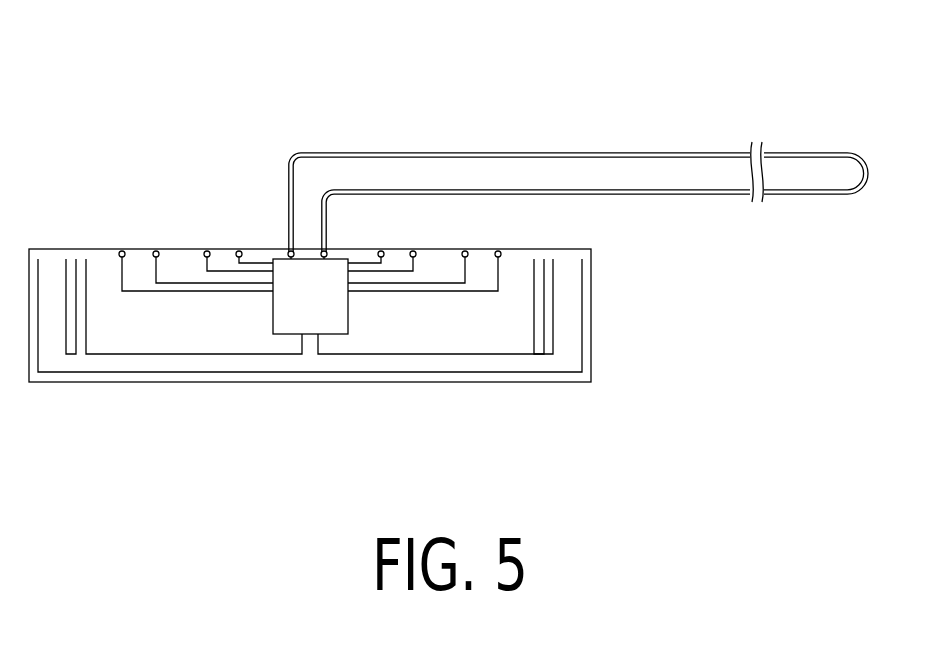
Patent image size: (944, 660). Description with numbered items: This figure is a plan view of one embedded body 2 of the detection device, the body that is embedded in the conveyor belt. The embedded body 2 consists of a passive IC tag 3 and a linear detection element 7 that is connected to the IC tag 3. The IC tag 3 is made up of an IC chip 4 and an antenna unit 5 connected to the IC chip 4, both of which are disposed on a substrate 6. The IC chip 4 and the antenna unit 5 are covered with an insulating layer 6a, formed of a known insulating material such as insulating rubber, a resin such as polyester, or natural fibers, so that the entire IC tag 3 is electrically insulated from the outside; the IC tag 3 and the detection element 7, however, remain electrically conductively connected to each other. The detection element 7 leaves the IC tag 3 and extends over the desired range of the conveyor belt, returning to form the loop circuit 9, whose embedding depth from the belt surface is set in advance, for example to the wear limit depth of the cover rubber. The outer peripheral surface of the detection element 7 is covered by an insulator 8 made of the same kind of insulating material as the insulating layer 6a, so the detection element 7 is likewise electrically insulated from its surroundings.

The embedded body 2 is at (255, 141).
The IC tag 3 is at (181, 237).
The IC chip 4 is at (280, 309).
The antenna unit 5 is at (425, 373).
The substrate 6 is at (162, 383).
The insulating layer 6a is at (103, 262).
The detection element 7 is at (439, 152).
The insulator 8 is at (512, 152).
The loop circuit 9 is at (614, 146).